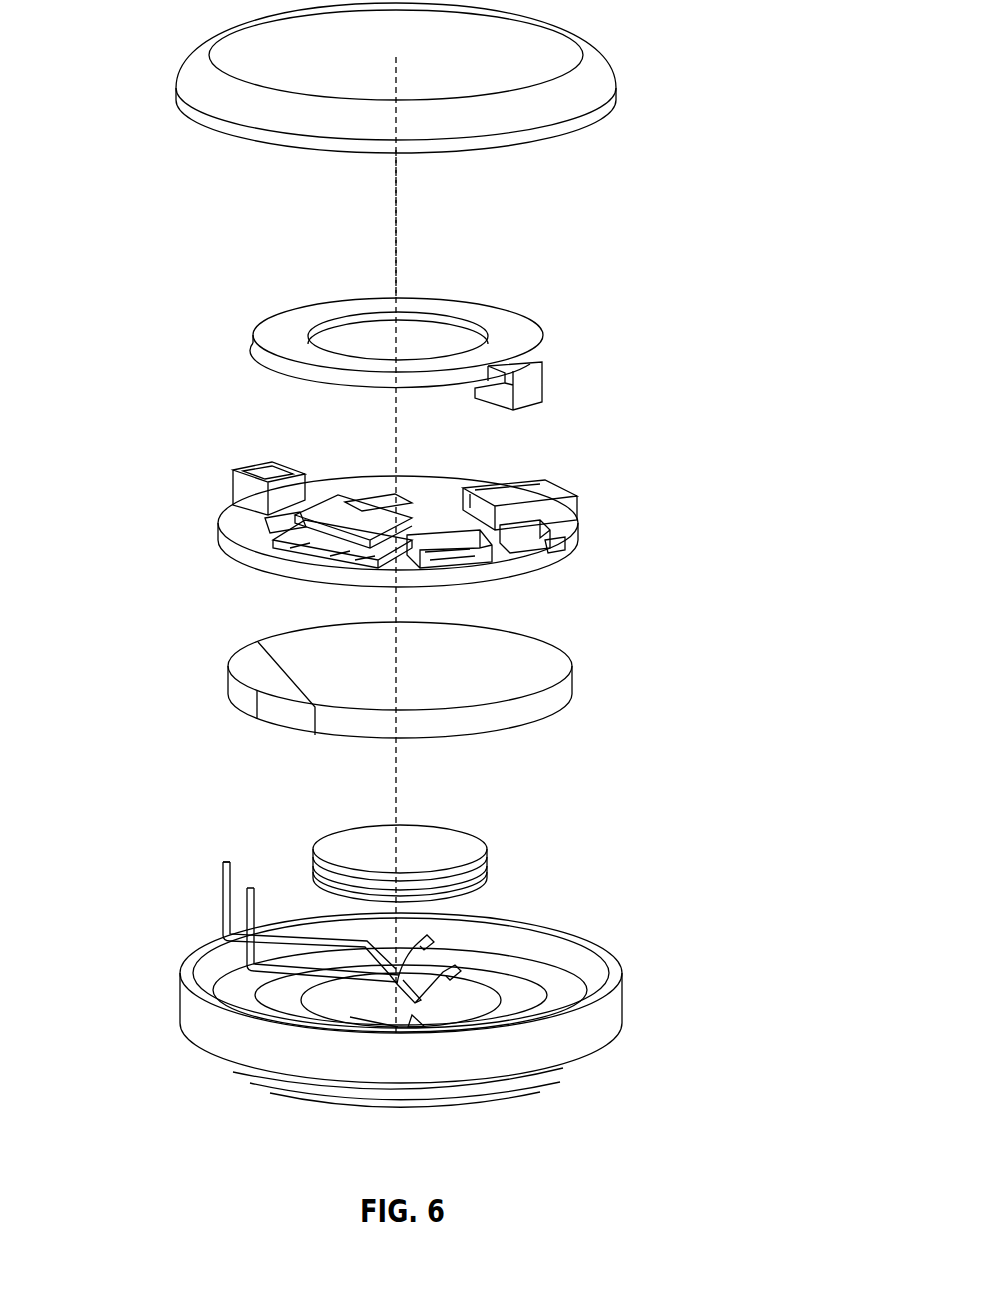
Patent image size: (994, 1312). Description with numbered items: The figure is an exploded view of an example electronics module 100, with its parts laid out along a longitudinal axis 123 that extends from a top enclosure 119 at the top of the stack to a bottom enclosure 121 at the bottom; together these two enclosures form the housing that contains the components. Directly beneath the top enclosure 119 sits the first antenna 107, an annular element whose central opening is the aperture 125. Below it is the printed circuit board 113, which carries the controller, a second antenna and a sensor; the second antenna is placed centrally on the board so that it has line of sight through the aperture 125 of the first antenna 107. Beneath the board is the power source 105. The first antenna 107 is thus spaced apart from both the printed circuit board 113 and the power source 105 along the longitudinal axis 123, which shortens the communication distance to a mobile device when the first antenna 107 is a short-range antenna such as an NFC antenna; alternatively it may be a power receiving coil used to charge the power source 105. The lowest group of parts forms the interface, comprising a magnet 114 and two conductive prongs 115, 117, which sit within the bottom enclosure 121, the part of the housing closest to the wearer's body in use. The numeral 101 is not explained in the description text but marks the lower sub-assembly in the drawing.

The electronics module 100 is at (150, 401).
The housing assembly 101 is at (197, 856).
The power source 105 is at (530, 668).
The first antenna 107 is at (520, 331).
The printed circuit board 113 is at (590, 537).
The magnet 114 is at (448, 838).
The conductive prong 115 is at (447, 943).
The conductive prong 117 is at (480, 967).
The top enclosure 119 is at (583, 97).
The bottom enclosure 121 is at (583, 1032).
The longitudinal axis 123 is at (398, 246).
The aperture 125 is at (420, 341).